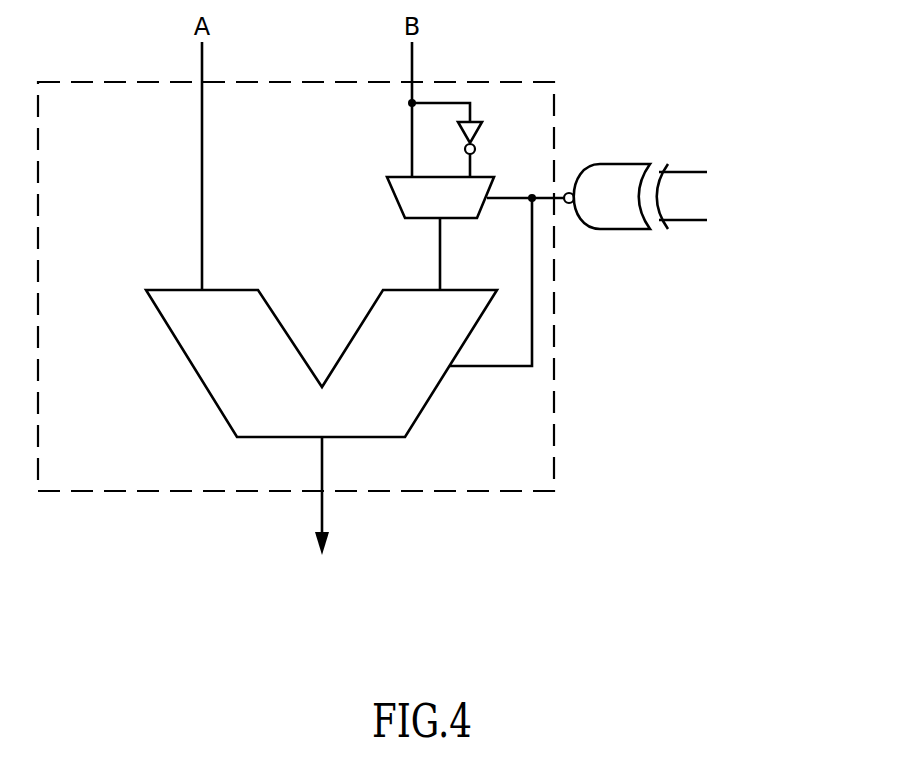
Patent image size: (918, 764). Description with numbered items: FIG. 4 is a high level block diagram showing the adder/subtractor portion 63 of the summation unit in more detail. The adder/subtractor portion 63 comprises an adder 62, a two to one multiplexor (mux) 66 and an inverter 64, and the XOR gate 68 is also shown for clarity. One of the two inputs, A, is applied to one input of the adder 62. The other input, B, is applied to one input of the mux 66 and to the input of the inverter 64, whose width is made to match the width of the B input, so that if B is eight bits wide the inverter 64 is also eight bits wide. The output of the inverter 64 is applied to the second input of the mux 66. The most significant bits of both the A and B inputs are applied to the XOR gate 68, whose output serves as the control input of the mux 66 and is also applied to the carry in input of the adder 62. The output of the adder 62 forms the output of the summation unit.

The adder 62 is at (287, 329).
The adder/subtractor portion 63 is at (468, 492).
The inverter 64 is at (478, 140).
The 2 to 1 multiplexor (mux) 66 is at (396, 202).
The XOR gate 68 is at (607, 230).